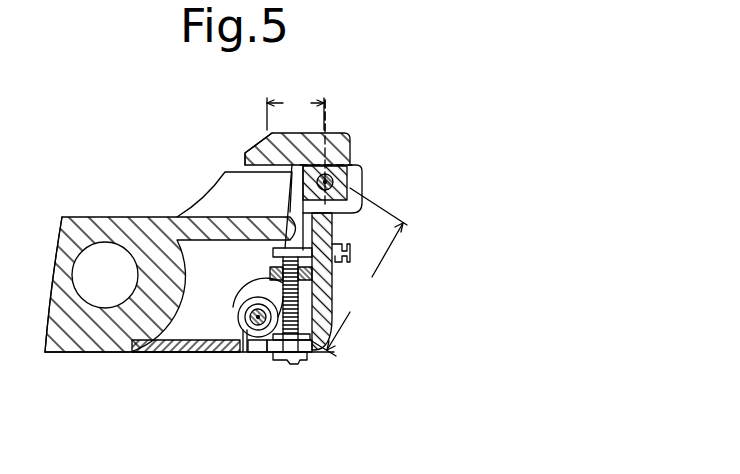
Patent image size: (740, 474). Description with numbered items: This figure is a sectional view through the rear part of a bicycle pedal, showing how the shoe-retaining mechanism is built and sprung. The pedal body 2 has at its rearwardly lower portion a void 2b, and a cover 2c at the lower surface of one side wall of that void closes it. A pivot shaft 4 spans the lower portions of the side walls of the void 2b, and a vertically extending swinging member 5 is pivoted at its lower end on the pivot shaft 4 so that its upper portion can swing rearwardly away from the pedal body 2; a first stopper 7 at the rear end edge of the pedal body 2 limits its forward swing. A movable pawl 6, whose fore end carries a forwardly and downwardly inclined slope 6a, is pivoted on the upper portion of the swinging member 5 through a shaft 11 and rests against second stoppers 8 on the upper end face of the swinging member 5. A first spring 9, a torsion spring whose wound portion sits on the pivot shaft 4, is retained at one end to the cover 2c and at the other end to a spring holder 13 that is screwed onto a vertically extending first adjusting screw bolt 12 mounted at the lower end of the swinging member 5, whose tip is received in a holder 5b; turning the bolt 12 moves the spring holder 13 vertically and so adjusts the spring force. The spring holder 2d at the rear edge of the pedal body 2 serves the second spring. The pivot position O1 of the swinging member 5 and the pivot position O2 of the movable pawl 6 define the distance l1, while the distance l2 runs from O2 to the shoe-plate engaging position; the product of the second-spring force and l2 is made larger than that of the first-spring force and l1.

The pedal body 2 is at (133, 217).
The void 2b is at (181, 332).
The cover 2c is at (163, 352).
The spring holder 2d is at (85, 217).
The pivot shaft 4 is at (245, 306).
The swinging member 5 is at (332, 316).
The holder 5b is at (320, 240).
The movable pawl 6 is at (343, 131).
The slope 6a is at (252, 140).
The first stopper 7 is at (289, 207).
The second stoppers 8 is at (322, 135).
The first spring 9 is at (254, 333).
The shaft 11 is at (352, 185).
The first adjusting screw bolt 12 is at (300, 364).
The spring holder 13 is at (302, 268).
The pivot position of swinging member O1 is at (246, 316).
The pivot position of movable pawl O2 is at (333, 181).
The distance l1 is at (358, 272).
The distance l2 is at (295, 110).